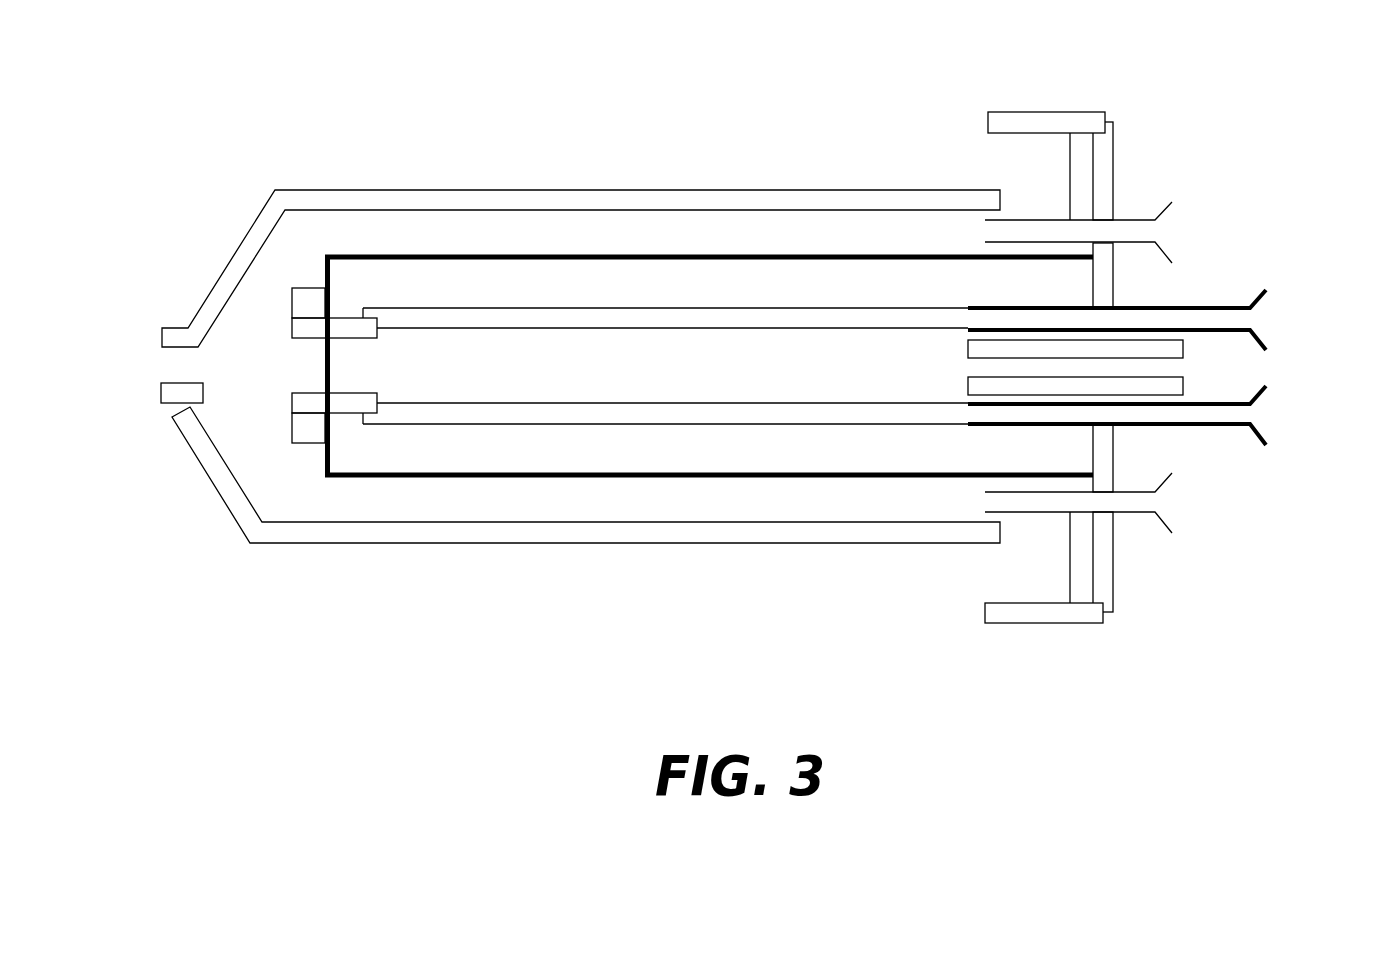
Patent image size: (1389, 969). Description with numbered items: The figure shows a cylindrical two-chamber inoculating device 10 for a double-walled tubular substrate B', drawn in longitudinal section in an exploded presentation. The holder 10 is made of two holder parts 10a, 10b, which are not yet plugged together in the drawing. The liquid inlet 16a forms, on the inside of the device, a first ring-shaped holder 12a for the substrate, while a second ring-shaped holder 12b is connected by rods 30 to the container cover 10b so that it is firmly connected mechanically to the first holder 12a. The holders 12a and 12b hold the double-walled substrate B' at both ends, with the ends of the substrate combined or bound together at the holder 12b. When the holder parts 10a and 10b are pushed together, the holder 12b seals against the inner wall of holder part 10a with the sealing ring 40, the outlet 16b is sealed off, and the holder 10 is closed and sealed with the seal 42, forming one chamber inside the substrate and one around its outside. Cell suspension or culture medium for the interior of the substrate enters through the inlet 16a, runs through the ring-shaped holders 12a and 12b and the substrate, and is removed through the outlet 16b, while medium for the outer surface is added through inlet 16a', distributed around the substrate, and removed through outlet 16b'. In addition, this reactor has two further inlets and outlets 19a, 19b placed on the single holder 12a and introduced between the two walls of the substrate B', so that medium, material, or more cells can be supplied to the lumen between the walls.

The holder 10 is at (738, 380).
The holder part 10a is at (652, 190).
The holder part 10b is at (1113, 158).
The first ring-shaped holder 12a is at (968, 330).
The second ring-shaped holder 12b is at (298, 331).
The liquid inlet 16a is at (1163, 367).
The inlet 16a' is at (1123, 232).
The outlet 16b is at (141, 369).
The outlet 16b' is at (1125, 503).
The inlet 19a is at (1302, 320).
The outlet 19b is at (1292, 415).
The rods 30 is at (428, 257).
The sealing ring 40 is at (303, 298).
The seal 42 is at (1086, 133).
The double-walled tubular substrate B' is at (653, 472).